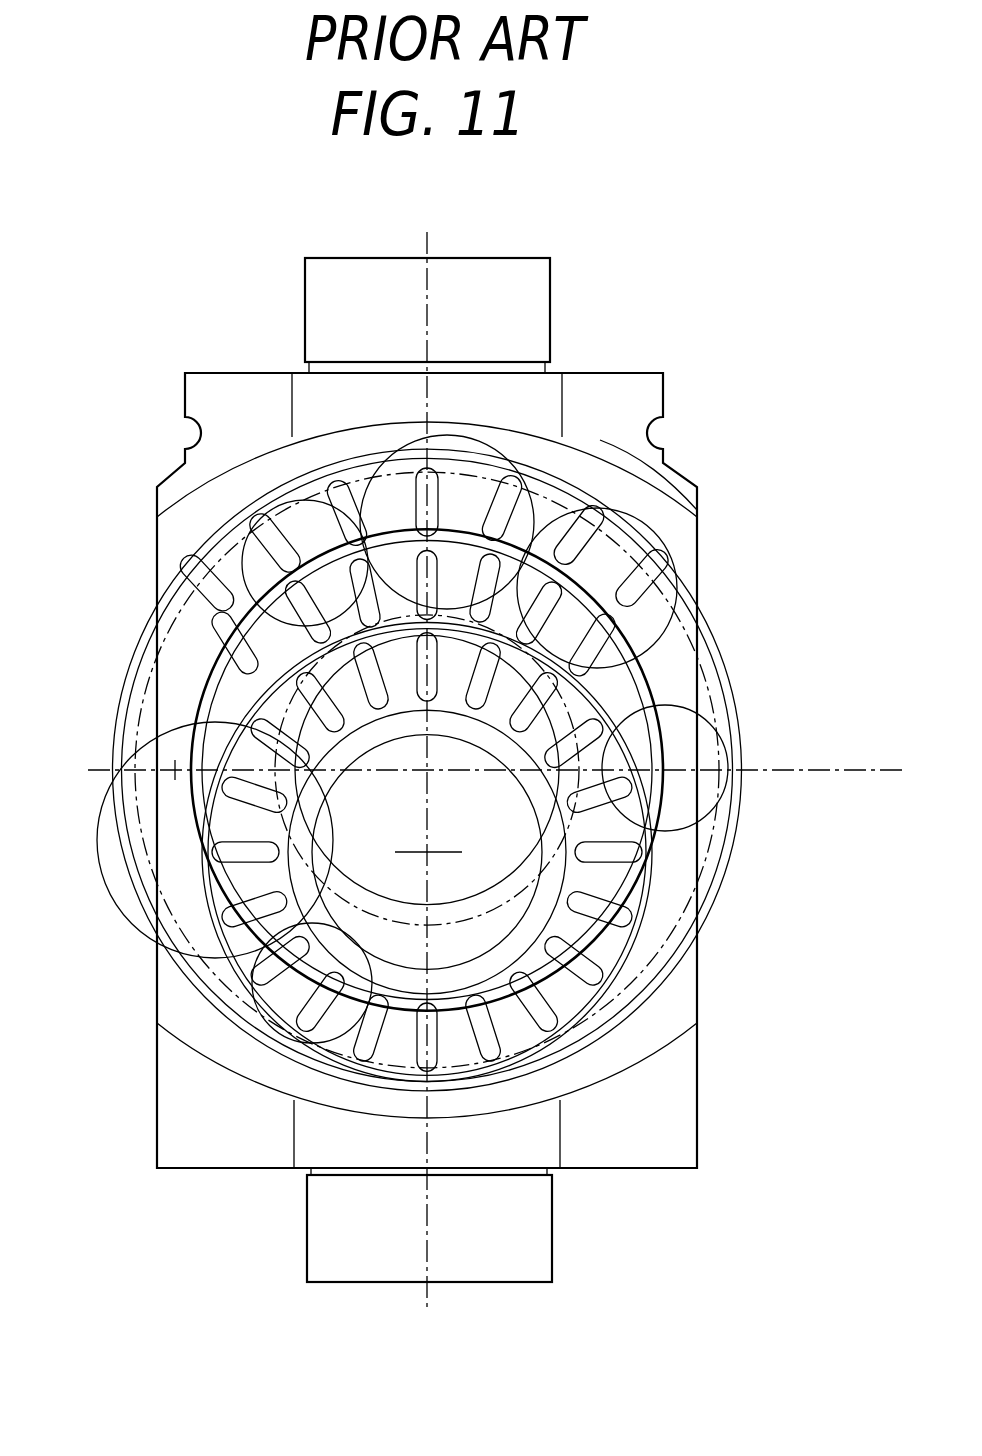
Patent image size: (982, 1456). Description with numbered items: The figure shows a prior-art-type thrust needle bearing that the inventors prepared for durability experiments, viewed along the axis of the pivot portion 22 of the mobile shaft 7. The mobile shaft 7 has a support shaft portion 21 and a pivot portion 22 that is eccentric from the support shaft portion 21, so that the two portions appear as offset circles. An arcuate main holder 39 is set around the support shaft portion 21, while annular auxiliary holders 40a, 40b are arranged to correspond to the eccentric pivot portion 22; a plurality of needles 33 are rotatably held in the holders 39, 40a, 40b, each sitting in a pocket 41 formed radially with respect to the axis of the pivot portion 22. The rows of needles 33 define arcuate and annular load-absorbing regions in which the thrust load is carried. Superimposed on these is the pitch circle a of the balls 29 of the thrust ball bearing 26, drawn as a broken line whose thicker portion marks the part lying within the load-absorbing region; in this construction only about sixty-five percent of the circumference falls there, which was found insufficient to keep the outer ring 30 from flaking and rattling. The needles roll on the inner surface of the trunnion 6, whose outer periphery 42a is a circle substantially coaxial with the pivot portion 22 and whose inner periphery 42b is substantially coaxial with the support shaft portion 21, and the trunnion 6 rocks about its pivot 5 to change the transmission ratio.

The pivot 5 is at (475, 278).
The trunnion 6 is at (685, 1128).
The mobile shaft 7 is at (160, 968).
The support shaft portion 21 is at (250, 1050).
The pivot portion 22 is at (180, 690).
The thrust ball bearing 26 is at (690, 938).
The ball 29 is at (137, 650).
The outer ring 30 is at (690, 530).
The needle 33 is at (578, 520).
The arcuate main holder 39 is at (545, 1040).
The annular auxiliary holder 40a is at (635, 540).
The annular auxiliary holder 40b is at (688, 600).
The pocket 41 is at (408, 470).
The outer periphery 42a is at (740, 832).
The inner periphery 42b is at (720, 880).
The pitch circle a is at (185, 760).